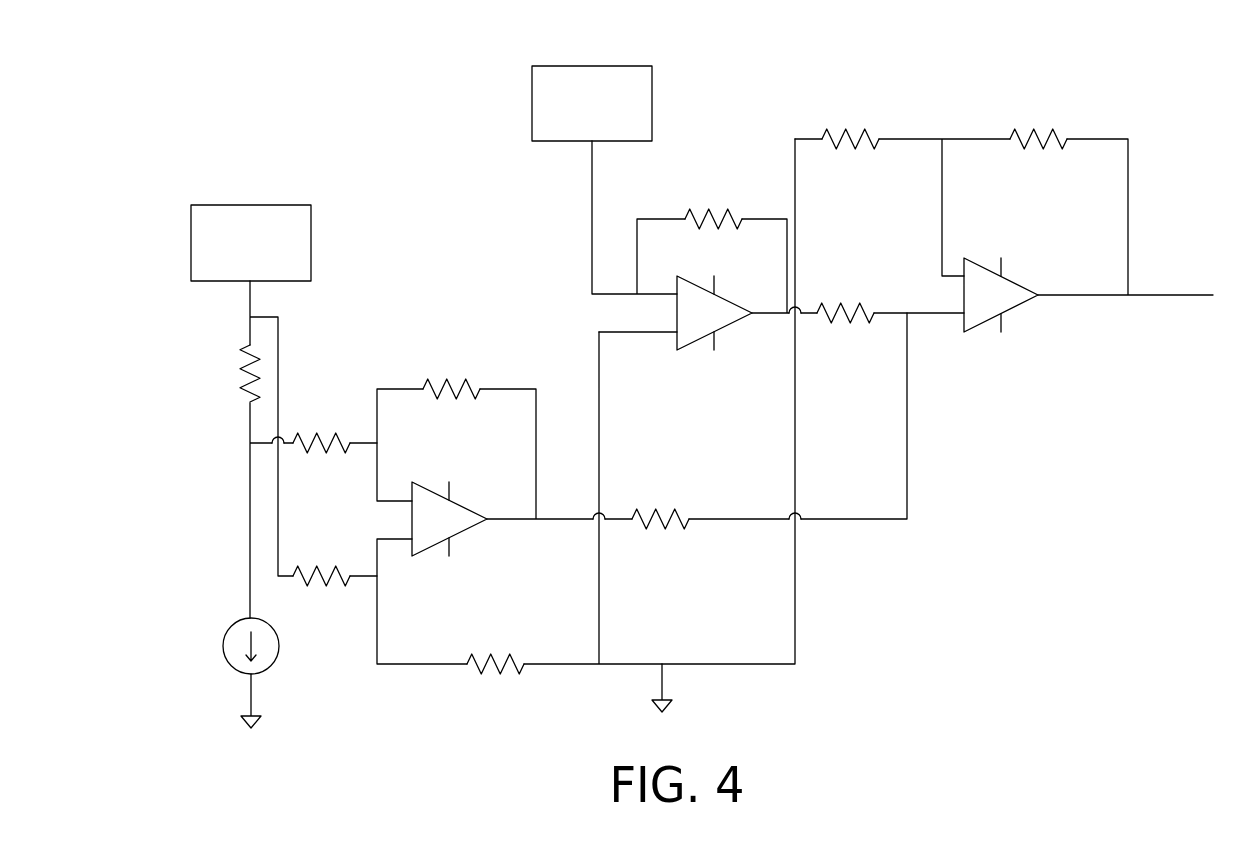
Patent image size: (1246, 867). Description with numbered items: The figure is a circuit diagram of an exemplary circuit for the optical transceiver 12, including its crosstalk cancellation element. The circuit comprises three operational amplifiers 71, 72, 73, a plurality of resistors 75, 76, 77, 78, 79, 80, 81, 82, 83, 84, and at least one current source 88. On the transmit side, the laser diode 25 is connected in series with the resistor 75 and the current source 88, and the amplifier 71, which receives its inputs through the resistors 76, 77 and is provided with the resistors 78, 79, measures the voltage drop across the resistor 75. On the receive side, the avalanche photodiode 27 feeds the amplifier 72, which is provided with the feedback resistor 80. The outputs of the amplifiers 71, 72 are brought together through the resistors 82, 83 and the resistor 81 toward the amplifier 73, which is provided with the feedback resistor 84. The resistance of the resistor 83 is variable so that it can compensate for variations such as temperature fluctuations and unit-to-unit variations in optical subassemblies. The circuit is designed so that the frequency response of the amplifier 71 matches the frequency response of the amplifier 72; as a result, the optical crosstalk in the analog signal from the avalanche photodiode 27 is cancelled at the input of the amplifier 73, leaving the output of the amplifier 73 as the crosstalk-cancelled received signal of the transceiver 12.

The optical transceiver 12 is at (1124, 357).
The laser diode 25 is at (280, 205).
The avalanche photodiode (APD) 27 is at (605, 66).
The operational amplifier 71 is at (459, 533).
The operational amplifier 72 is at (724, 328).
The operational amplifier 73 is at (1014, 279).
The resistor 75 is at (244, 360).
The resistor 76 is at (300, 434).
The resistor 77 is at (300, 575).
The resistor 78 is at (513, 656).
The resistor 79 is at (468, 380).
The resistor 80 is at (712, 211).
The resistor 81 is at (872, 132).
The resistor 82 is at (866, 310).
The resistor 83 is at (656, 512).
The resistor 84 is at (1057, 132).
The current source 88 is at (233, 625).